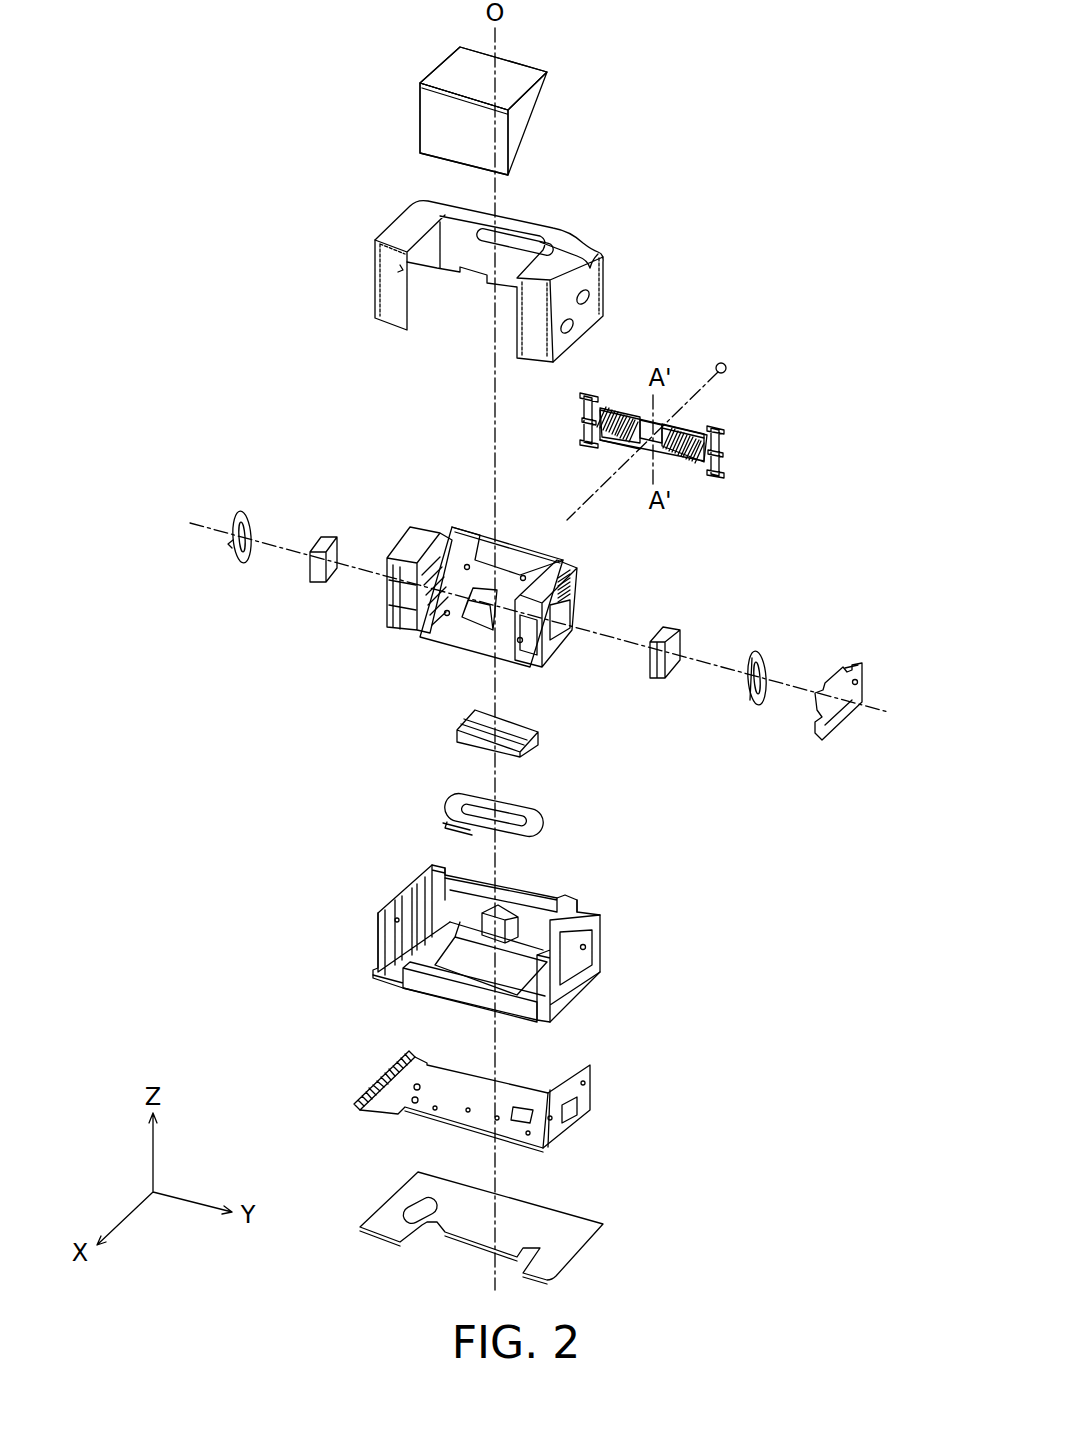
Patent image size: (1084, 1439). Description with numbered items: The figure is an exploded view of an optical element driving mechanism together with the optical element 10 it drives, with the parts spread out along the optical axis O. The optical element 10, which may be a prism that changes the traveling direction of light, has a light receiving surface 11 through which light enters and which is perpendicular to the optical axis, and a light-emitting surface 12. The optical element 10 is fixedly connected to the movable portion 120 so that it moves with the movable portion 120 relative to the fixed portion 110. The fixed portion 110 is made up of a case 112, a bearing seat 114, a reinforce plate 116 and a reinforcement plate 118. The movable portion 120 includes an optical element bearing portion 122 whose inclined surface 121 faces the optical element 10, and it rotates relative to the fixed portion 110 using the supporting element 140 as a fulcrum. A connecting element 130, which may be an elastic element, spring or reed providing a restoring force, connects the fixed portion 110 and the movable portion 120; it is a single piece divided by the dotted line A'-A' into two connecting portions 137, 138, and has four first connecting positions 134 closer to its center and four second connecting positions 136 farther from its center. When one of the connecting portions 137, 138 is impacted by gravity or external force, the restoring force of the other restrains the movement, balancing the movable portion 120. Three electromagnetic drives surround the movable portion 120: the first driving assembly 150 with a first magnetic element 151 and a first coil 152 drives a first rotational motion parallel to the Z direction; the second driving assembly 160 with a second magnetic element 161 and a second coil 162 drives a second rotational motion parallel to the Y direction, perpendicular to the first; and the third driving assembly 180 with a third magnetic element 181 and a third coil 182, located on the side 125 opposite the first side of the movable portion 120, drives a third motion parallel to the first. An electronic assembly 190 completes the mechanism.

The optical element 10 is at (483, 103).
The light receiving surface 11 is at (452, 69).
The light-emitting surface 12 is at (433, 121).
The fixed portion 110 is at (879, 25).
The case 112 is at (565, 243).
The bearing seat 114 is at (603, 947).
The reinforce plate 116 is at (604, 1225).
The reinforcement plate 118 is at (861, 663).
The movable portion 120 is at (478, 589).
The inclined surface 121 is at (460, 636).
The optical element bearing portion 122 is at (517, 557).
The side 125 is at (565, 637).
The connecting element 130 is at (655, 440).
The first connecting positions 134 is at (638, 416).
The second connecting positions 136 is at (584, 398).
The connecting portion 137 is at (612, 441).
The connecting portion 138 is at (688, 438).
The supporting element 140 is at (727, 364).
The first driving assembly 150 is at (213, 457).
The first magnetic element 151 is at (328, 534).
The first coil 152 is at (242, 511).
The second driving assembly 160 is at (377, 712).
The second magnetic element 161 is at (455, 733).
The second coil 162 is at (455, 800).
The third driving assembly 180 is at (645, 579).
The third magnetic element 181 is at (671, 628).
The third coil 182 is at (759, 651).
The electronic assembly 190 is at (592, 1090).